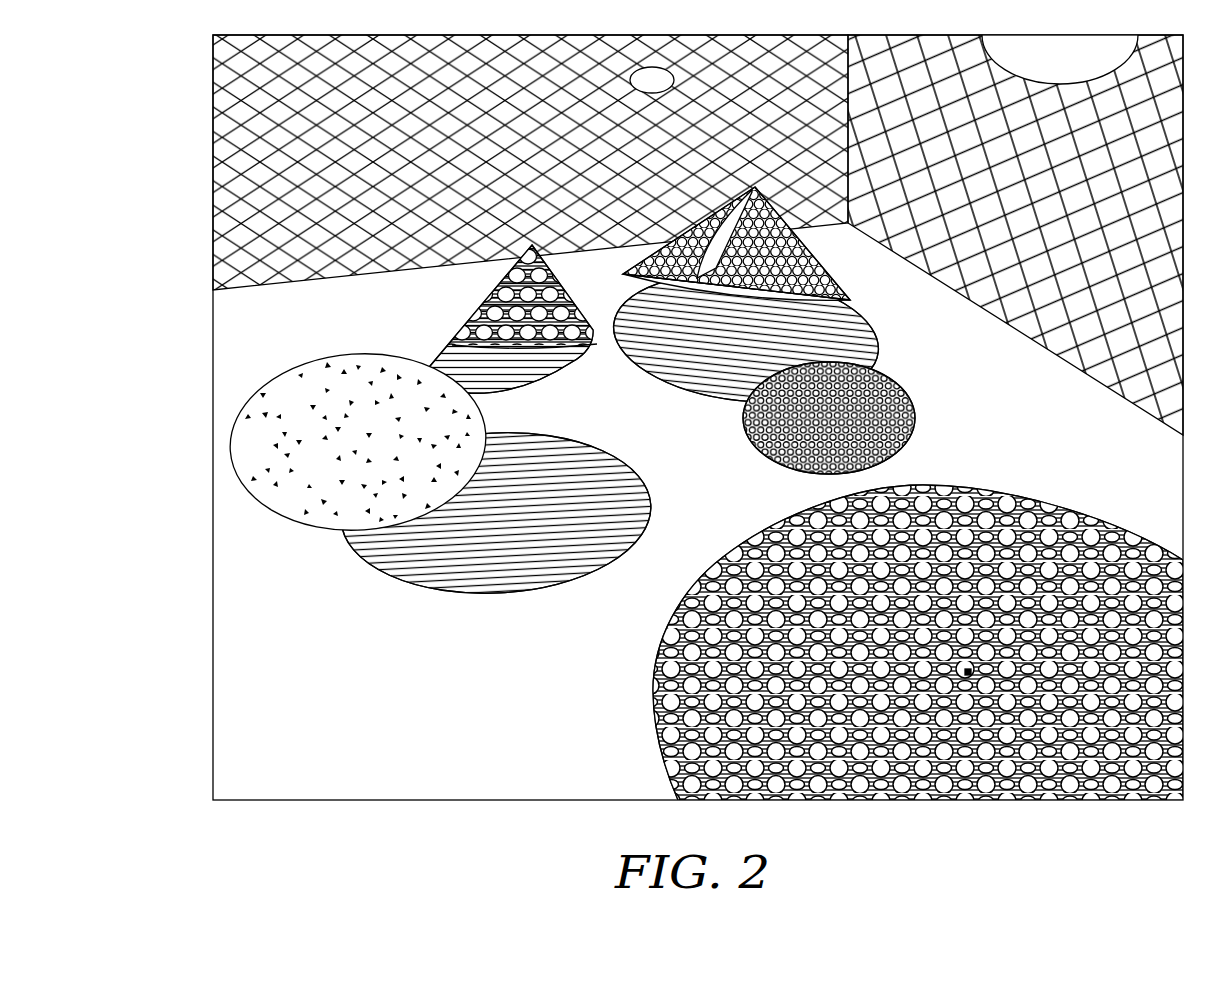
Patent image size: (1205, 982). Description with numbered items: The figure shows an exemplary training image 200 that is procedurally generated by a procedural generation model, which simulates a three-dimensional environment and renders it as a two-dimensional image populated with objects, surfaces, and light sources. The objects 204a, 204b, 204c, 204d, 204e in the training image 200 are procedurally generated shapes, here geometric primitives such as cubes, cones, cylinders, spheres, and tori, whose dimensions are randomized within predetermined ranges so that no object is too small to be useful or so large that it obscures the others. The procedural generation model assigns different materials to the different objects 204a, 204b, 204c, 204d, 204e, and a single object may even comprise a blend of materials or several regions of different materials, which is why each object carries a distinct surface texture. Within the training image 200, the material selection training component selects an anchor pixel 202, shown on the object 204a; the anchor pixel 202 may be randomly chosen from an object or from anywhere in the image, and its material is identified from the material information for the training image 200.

The training image 200 is at (121, 86).
The anchor pixel 202 is at (968, 676).
The object 204a is at (1048, 503).
The object 204b is at (311, 372).
The object 204c is at (497, 303).
The object 204d is at (830, 265).
The object 204e is at (928, 391).